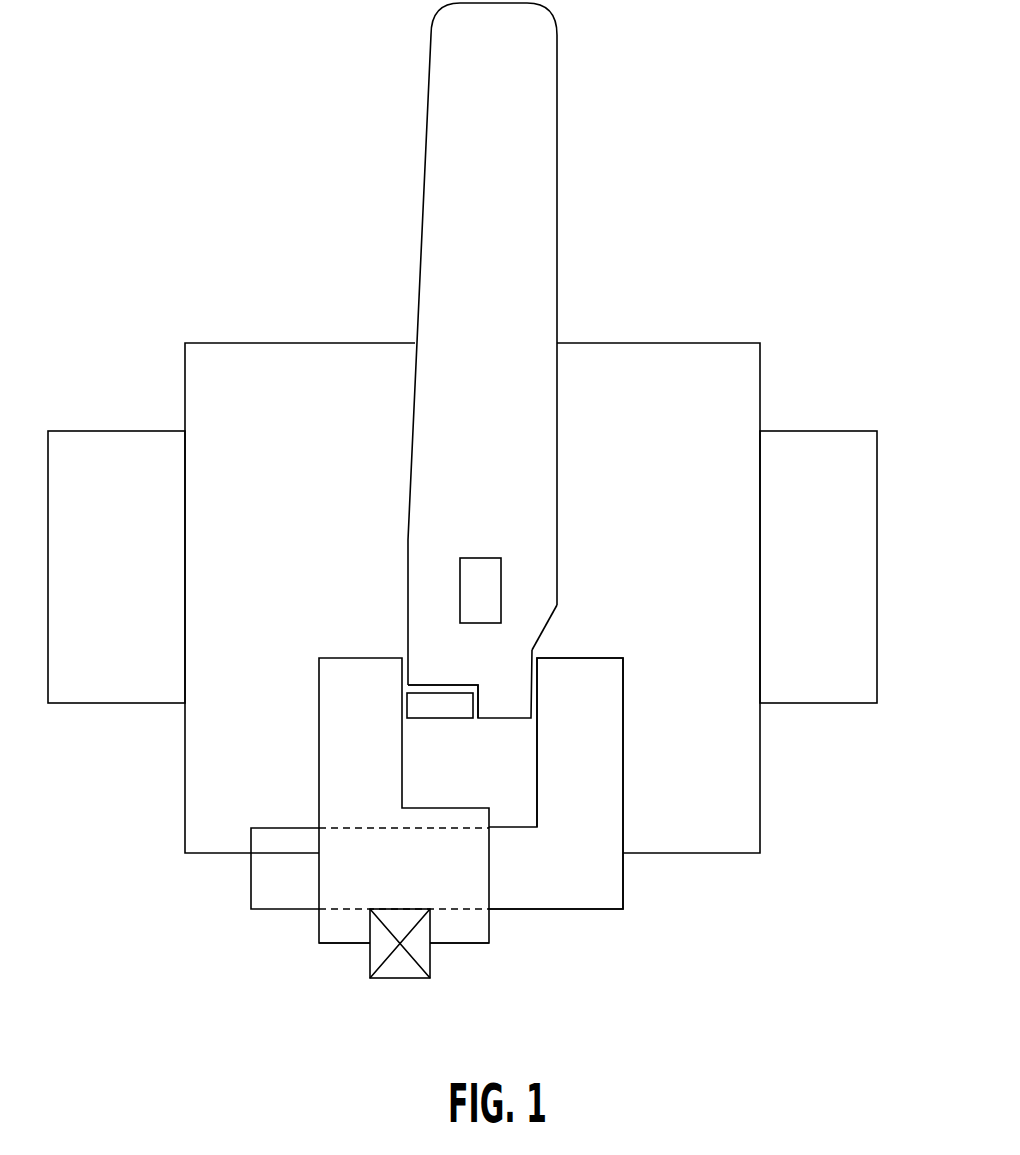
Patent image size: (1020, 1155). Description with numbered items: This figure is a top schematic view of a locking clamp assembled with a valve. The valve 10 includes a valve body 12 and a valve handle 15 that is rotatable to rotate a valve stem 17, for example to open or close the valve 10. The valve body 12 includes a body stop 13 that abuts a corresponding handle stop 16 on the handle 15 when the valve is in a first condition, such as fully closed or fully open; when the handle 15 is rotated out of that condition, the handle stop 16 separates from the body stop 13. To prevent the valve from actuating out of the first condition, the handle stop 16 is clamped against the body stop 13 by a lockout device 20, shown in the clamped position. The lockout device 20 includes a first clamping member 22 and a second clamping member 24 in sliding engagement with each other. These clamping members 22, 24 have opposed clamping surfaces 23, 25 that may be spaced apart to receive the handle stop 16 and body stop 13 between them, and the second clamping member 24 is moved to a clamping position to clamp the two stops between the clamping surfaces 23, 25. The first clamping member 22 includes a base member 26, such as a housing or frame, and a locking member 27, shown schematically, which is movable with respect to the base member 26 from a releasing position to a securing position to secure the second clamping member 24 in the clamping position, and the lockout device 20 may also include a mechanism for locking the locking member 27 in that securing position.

The valve 10 is at (104, 100).
The valve body 12 is at (725, 365).
The body stop 13 is at (443, 705).
The valve handle 15 is at (503, 162).
The handle stop 16 is at (507, 697).
The valve stem 17 is at (482, 597).
The lockout device 20 is at (570, 990).
The first clamping member 22 is at (337, 945).
The clamping surface 23 is at (400, 730).
The second clamping member 24 is at (602, 883).
The clamping surface 25 is at (536, 691).
The base member 26 is at (357, 759).
The locking member 27 is at (398, 967).